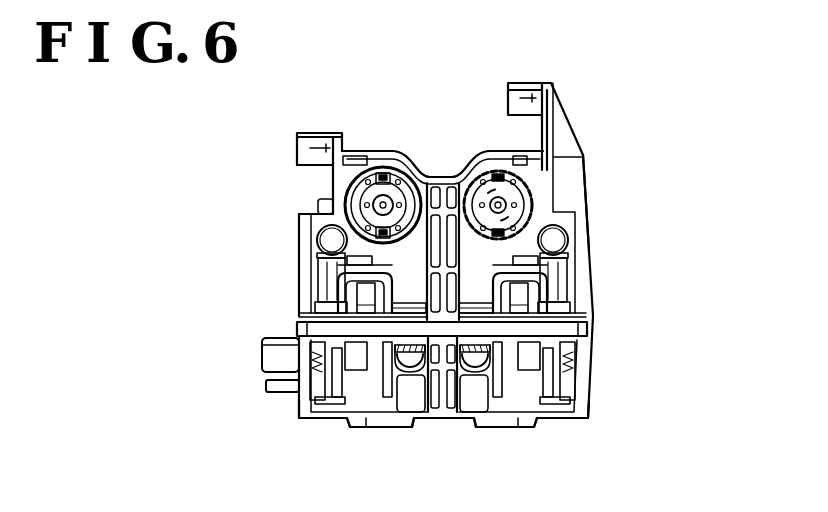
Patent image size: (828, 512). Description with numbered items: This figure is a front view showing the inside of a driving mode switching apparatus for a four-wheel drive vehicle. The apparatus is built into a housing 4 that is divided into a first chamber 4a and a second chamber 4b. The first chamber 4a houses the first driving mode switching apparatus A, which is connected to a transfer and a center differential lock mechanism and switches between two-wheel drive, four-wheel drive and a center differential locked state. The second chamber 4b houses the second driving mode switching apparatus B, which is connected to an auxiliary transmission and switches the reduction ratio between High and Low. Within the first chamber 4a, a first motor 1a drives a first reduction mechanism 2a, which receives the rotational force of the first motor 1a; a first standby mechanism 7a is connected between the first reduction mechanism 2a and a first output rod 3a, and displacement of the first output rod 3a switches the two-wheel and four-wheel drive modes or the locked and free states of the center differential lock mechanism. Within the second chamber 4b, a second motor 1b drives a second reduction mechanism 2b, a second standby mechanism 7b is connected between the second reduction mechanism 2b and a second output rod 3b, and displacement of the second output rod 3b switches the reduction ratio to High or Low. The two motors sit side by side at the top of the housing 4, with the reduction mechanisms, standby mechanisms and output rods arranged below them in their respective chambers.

The first motor 1a is at (393, 167).
The second motor 1b is at (488, 171).
The first reduction mechanism 2a is at (289, 215).
The second reduction mechanism 2b is at (598, 214).
The first output rod 3a is at (420, 375).
The second output rod 3b is at (468, 375).
The housing 4 is at (593, 291).
The first chamber 4a is at (292, 190).
The second chamber 4b is at (597, 189).
The first standby mechanism 7a is at (306, 428).
The second standby mechanism 7b is at (582, 427).
The first driving mode switching apparatus A is at (372, 433).
The second driving mode switching apparatus B is at (516, 435).